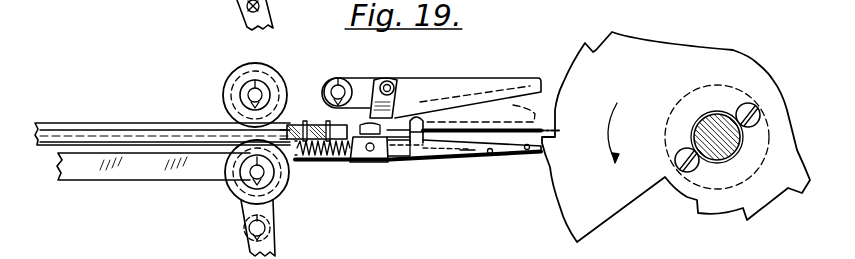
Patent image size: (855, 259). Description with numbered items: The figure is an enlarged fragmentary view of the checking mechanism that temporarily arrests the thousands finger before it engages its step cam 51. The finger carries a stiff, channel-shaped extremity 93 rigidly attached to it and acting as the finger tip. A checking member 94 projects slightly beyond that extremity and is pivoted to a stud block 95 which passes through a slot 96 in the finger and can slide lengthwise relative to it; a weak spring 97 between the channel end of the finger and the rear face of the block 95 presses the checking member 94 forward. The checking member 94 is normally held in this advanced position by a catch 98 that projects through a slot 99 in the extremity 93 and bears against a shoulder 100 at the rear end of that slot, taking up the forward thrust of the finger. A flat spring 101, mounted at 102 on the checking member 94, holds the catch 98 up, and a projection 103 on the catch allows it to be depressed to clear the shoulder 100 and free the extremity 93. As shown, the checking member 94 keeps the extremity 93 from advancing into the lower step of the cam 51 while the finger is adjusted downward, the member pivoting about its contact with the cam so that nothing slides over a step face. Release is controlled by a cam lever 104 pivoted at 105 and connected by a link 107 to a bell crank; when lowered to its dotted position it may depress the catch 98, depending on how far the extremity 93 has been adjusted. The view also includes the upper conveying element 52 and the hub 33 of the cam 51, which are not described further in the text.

The upper conveyor belt 52 is at (143, 134).
The cam lever 104 is at (515, 85).
The pivot 105 is at (327, 92).
The link 107 is at (377, 95).
The slot 96 is at (343, 121).
The weak spring 97 is at (323, 158).
The stud block 95 is at (380, 158).
The shoulder 100 is at (403, 153).
The catch 98 is at (408, 134).
The projection 103 is at (413, 118).
The slot 99 is at (427, 127).
The mounting 102 is at (503, 153).
The channel-shaped extremity 93 is at (492, 136).
The checking member 94 is at (447, 157).
The flat spring 101 is at (467, 151).
The cam 51 is at (617, 203).
The cam shaft hub 33 is at (713, 130).